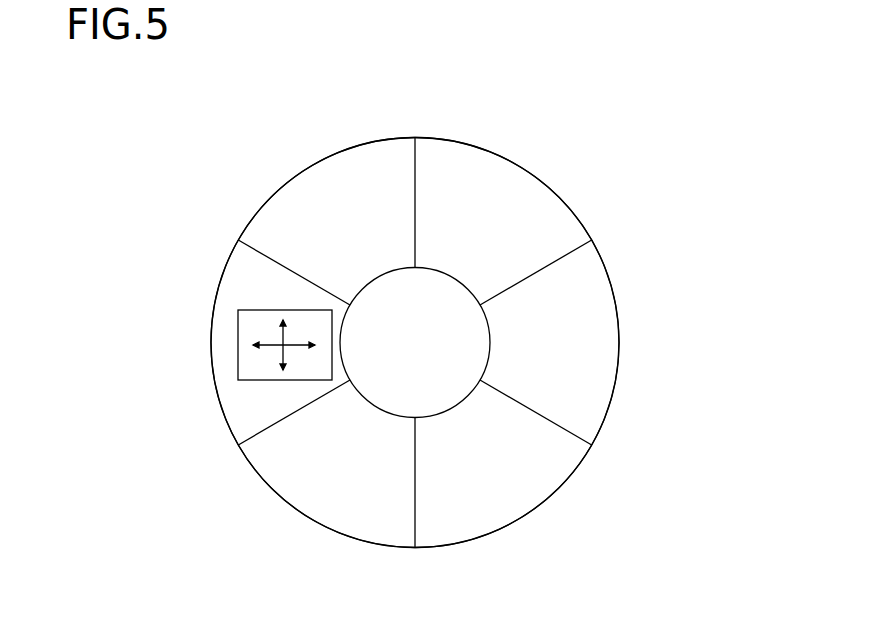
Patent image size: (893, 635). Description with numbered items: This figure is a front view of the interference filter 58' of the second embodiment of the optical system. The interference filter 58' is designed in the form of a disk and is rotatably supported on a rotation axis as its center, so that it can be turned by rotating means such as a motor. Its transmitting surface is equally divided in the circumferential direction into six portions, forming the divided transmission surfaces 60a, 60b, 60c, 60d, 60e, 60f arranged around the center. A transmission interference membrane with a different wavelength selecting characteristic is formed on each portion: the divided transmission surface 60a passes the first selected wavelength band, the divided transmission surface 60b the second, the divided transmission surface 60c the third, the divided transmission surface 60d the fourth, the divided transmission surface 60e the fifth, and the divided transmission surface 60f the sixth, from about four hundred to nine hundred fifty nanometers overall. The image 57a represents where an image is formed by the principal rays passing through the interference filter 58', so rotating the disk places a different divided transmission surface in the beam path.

The interference filter 58' is at (415, 306).
The divided transmission surface 60a is at (517, 193).
The divided transmission surface 60b is at (602, 350).
The divided transmission surface 60c is at (505, 490).
The divided transmission surface 60d is at (303, 491).
The divided transmission surface 60e is at (218, 322).
The divided transmission surface 60f is at (317, 185).
The image 57a is at (238, 364).